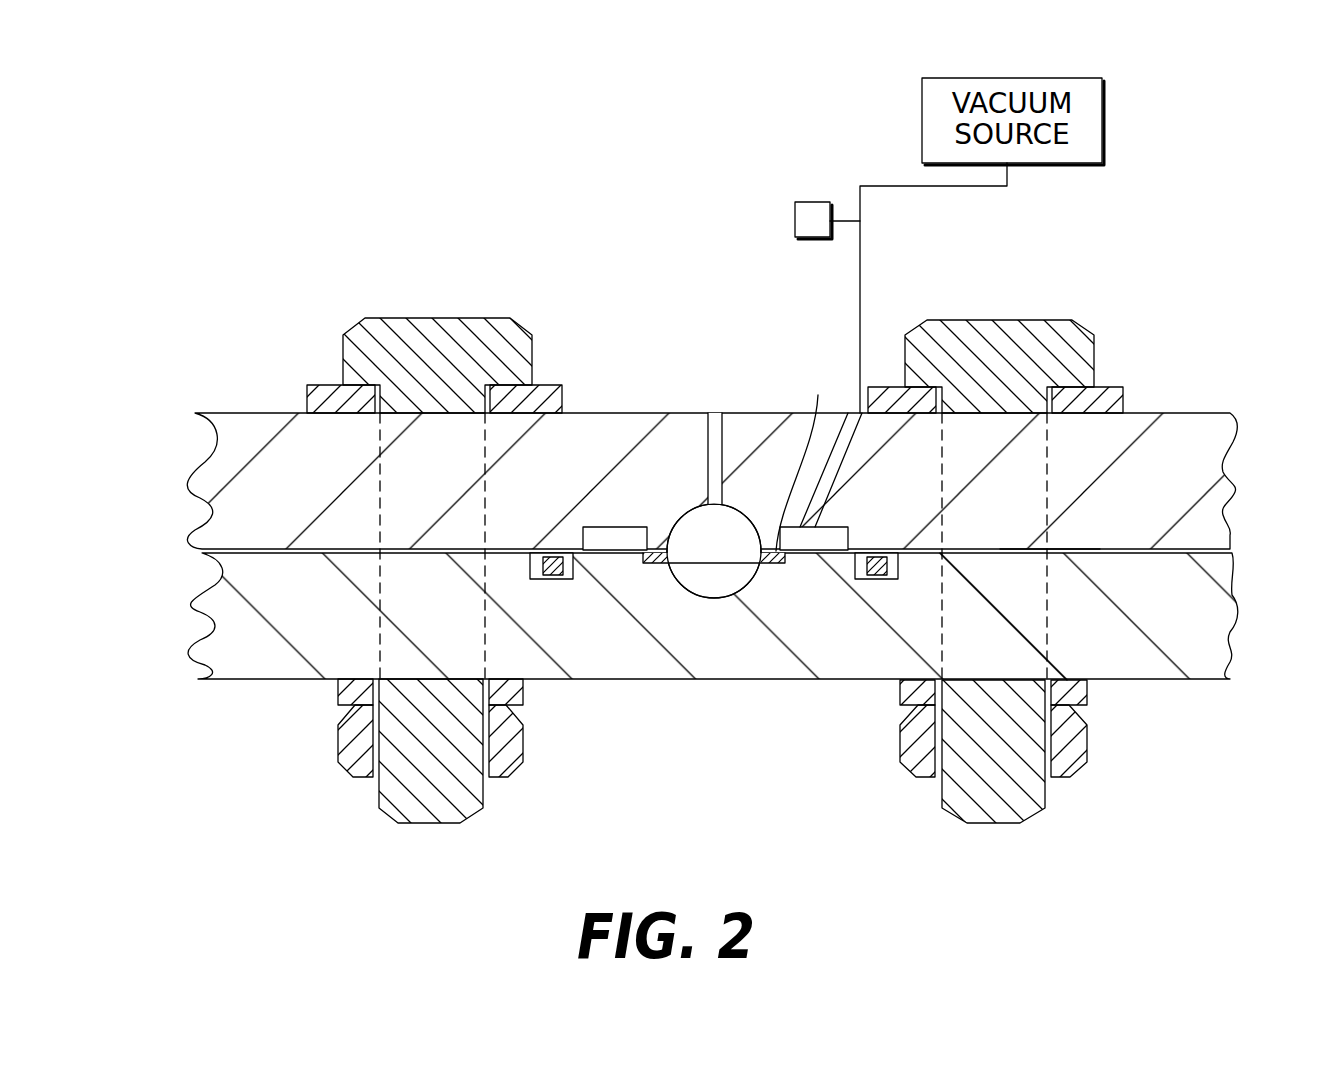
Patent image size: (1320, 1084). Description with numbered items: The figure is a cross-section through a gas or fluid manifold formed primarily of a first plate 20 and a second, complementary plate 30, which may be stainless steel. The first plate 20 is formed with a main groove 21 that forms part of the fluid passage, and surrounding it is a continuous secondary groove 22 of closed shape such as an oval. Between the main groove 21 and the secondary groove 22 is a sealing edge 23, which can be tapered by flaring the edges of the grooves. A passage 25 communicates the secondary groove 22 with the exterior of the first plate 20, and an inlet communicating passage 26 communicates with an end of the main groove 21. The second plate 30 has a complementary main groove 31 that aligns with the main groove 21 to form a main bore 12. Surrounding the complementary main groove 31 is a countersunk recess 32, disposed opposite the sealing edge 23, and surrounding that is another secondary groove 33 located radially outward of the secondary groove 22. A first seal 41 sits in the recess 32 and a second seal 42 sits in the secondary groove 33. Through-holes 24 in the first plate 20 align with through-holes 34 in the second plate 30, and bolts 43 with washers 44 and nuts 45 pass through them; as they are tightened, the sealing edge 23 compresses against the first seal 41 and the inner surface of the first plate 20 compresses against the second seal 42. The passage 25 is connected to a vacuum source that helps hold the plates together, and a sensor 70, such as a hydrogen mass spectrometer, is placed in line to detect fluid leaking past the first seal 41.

The main bore 12 is at (696, 541).
The first plate 20 is at (1212, 455).
The main groove 21 is at (733, 503).
The secondary groove 22 is at (836, 527).
The sealing edge 23 is at (805, 455).
The through-holes 24 is at (1047, 540).
The passage 25 is at (827, 480).
The inlet communicating passage 26 is at (720, 413).
The second plate 30 is at (1210, 582).
The complementary main groove 31 is at (723, 597).
The countersunk recess 32 is at (764, 557).
The secondary groove 33 is at (547, 580).
The through-holes 34 is at (1047, 627).
The first seal 41 is at (664, 548).
The second seal 42 is at (550, 557).
The bolts 43 is at (990, 330).
The washers 44 is at (1098, 385).
The nuts 45 is at (1075, 750).
The sensor 70 is at (812, 200).